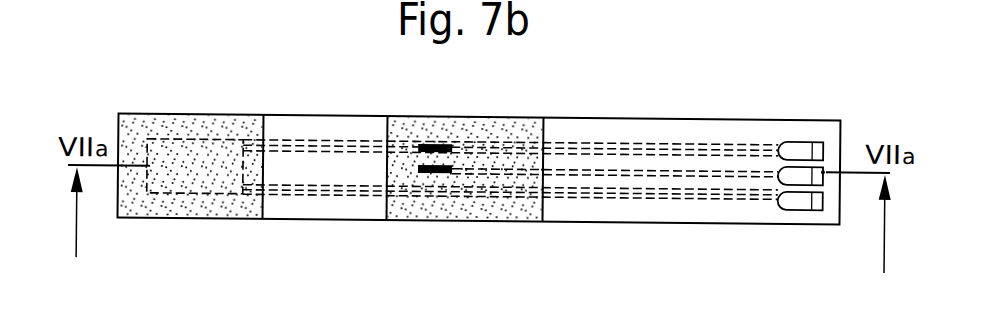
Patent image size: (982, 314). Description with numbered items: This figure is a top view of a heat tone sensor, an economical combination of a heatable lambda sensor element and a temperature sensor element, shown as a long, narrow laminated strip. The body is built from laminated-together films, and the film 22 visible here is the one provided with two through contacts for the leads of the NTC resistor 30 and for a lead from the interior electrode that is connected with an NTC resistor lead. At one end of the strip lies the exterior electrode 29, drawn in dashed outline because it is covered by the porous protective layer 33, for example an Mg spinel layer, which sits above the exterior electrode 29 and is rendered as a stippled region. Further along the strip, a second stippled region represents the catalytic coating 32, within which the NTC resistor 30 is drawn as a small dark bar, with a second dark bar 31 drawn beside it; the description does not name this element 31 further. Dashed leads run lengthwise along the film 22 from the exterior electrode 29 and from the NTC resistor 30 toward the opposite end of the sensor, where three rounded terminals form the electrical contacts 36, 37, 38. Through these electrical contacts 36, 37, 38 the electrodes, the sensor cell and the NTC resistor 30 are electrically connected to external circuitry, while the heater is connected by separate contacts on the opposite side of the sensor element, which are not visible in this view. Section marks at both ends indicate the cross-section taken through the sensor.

The film 22 is at (317, 134).
The exterior electrode 29 is at (193, 186).
The NTC resistor 30 is at (437, 174).
The contact bar 31 is at (433, 145).
The catalytic coating 32 is at (513, 140).
The porous protective layer 33 is at (183, 128).
The electrical contact 36 is at (802, 152).
The electrical contact 37 is at (810, 176).
The electrical contact 38 is at (793, 201).